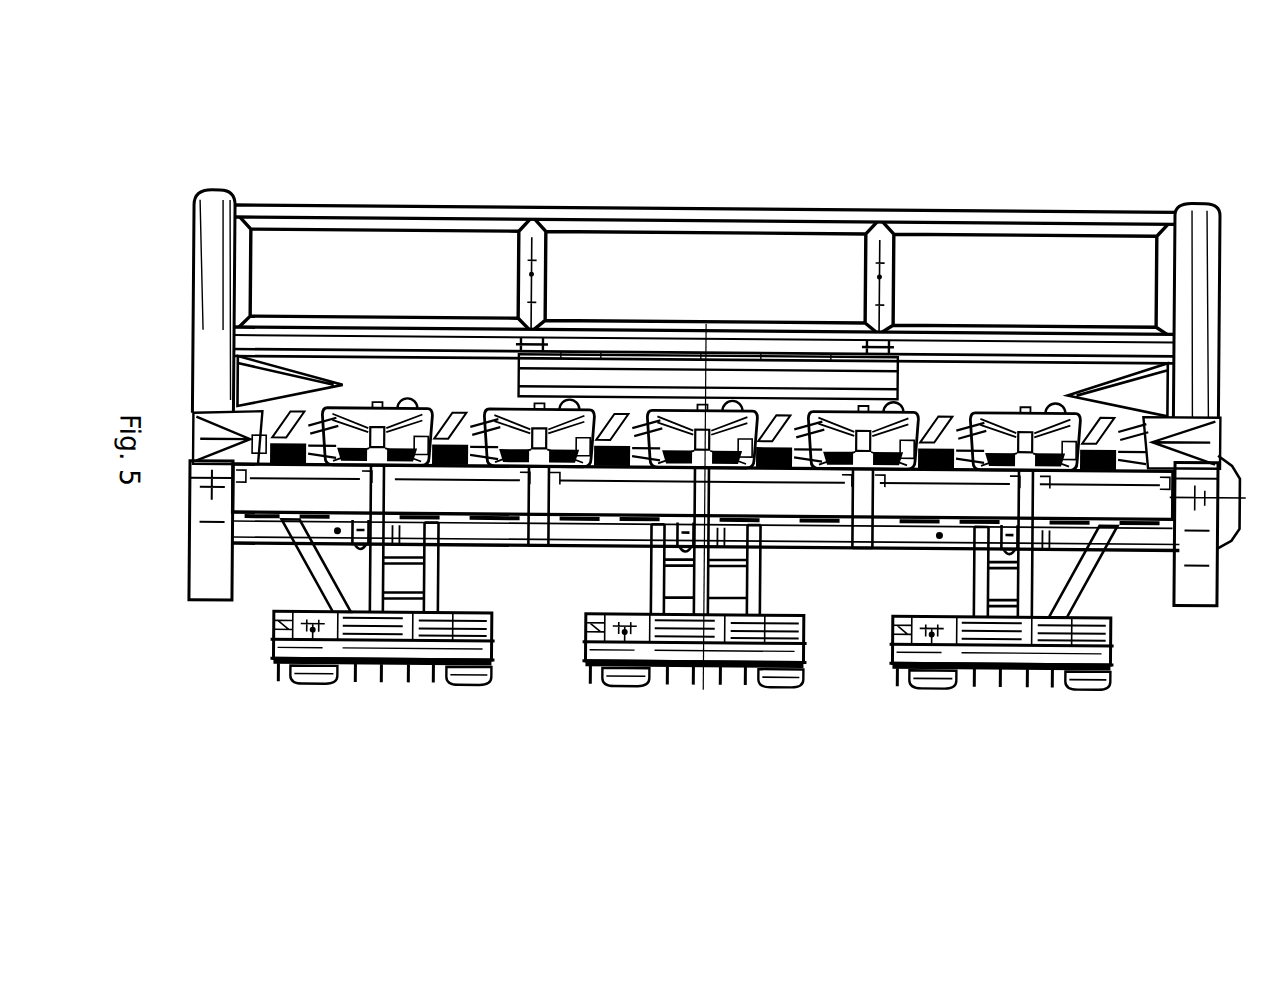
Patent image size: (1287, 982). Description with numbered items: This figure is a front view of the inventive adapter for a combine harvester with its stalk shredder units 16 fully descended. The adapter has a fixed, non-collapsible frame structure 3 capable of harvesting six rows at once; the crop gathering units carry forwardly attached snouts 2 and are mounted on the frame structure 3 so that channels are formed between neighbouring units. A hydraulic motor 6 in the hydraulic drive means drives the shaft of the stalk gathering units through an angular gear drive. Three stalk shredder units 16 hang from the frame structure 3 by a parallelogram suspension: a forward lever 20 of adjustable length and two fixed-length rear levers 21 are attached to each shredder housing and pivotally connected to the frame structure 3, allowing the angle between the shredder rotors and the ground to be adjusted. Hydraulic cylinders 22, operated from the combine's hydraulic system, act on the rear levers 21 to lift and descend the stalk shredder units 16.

The snout 2 is at (412, 434).
The frame structure 3 is at (203, 315).
The hydraulic motor 6 is at (1225, 501).
The stalk shredder unit 16 is at (362, 727).
The forward lever 20 is at (385, 673).
The rear lever 21 is at (430, 564).
The hydraulic cylinder 22 is at (347, 552).